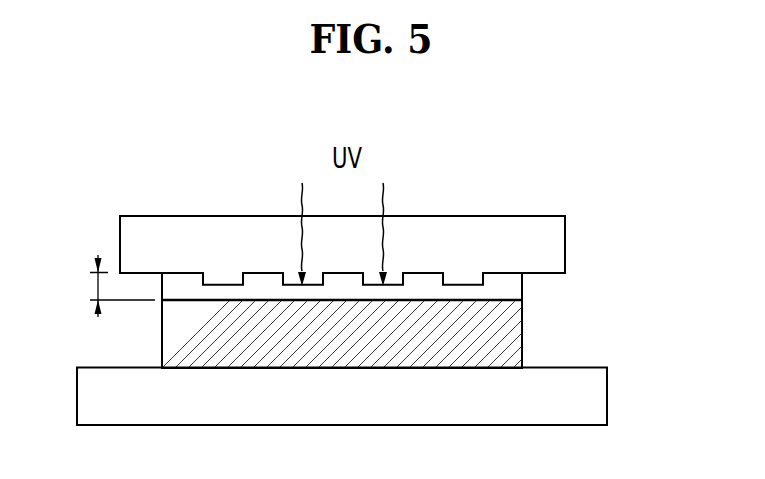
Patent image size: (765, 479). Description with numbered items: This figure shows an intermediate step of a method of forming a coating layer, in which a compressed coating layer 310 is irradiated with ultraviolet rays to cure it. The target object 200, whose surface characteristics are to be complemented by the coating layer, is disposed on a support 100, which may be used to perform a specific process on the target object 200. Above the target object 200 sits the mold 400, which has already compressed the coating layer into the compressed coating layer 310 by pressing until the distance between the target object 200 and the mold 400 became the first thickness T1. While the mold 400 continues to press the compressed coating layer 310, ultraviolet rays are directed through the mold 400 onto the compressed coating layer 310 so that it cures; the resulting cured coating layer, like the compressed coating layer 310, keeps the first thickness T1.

The support 100 is at (598, 398).
The target object 200 is at (513, 335).
The compressed coating layer 310 is at (513, 287).
The mold 400 is at (557, 243).
The first thickness T1 is at (108, 286).